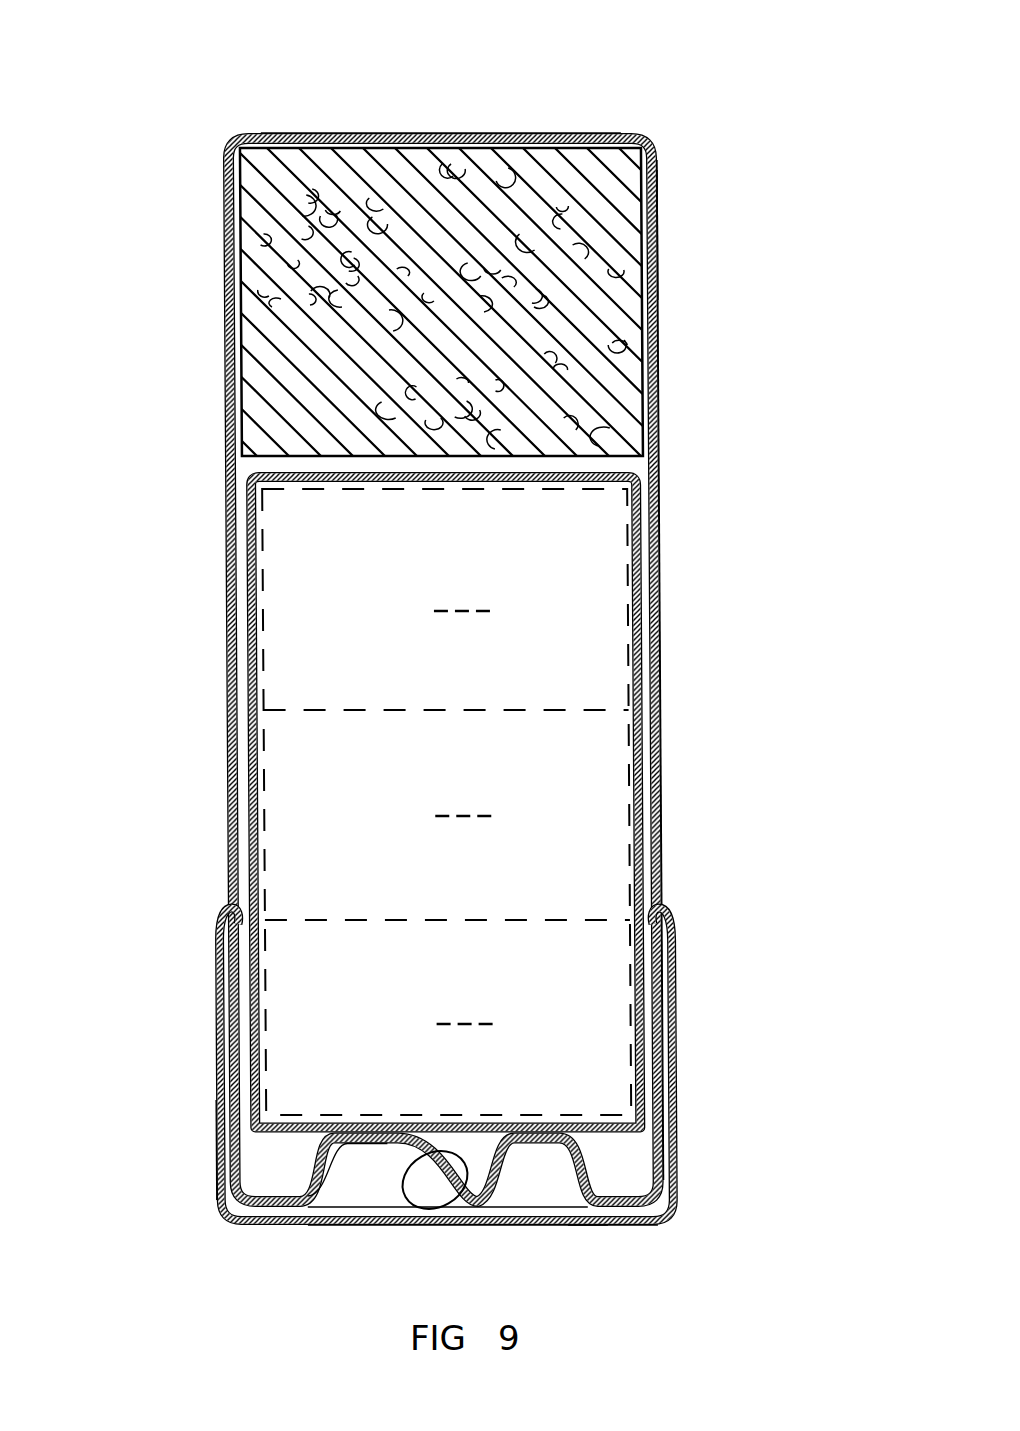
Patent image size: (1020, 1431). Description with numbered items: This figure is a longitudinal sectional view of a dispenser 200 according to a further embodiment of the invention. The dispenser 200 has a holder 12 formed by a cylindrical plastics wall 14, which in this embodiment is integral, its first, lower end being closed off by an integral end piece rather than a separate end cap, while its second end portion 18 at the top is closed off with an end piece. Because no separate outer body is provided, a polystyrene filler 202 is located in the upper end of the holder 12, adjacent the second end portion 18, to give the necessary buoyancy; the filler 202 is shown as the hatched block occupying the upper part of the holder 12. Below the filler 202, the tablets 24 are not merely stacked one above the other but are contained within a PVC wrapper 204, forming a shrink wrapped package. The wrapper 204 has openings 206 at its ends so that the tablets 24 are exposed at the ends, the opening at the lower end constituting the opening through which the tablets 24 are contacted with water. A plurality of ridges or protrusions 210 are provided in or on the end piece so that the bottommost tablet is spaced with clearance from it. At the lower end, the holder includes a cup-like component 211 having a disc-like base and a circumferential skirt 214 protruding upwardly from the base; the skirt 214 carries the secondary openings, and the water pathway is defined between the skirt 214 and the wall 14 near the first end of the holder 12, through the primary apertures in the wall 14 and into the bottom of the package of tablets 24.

The dispenser 200 is at (740, 56).
The holder 12 is at (445, 670).
The holder wall 14 is at (660, 675).
The second end portion 18 is at (657, 230).
The polystyrene filler 202 is at (441, 302).
The PVC wrapper 204 is at (445, 802).
The tablets 24 is at (446, 802).
The openings 206 is at (347, 1170).
The ridges or protrusions 210 is at (507, 1167).
The cup-like component 211 is at (216, 1150).
The circumferential skirt 214 is at (446, 1064).